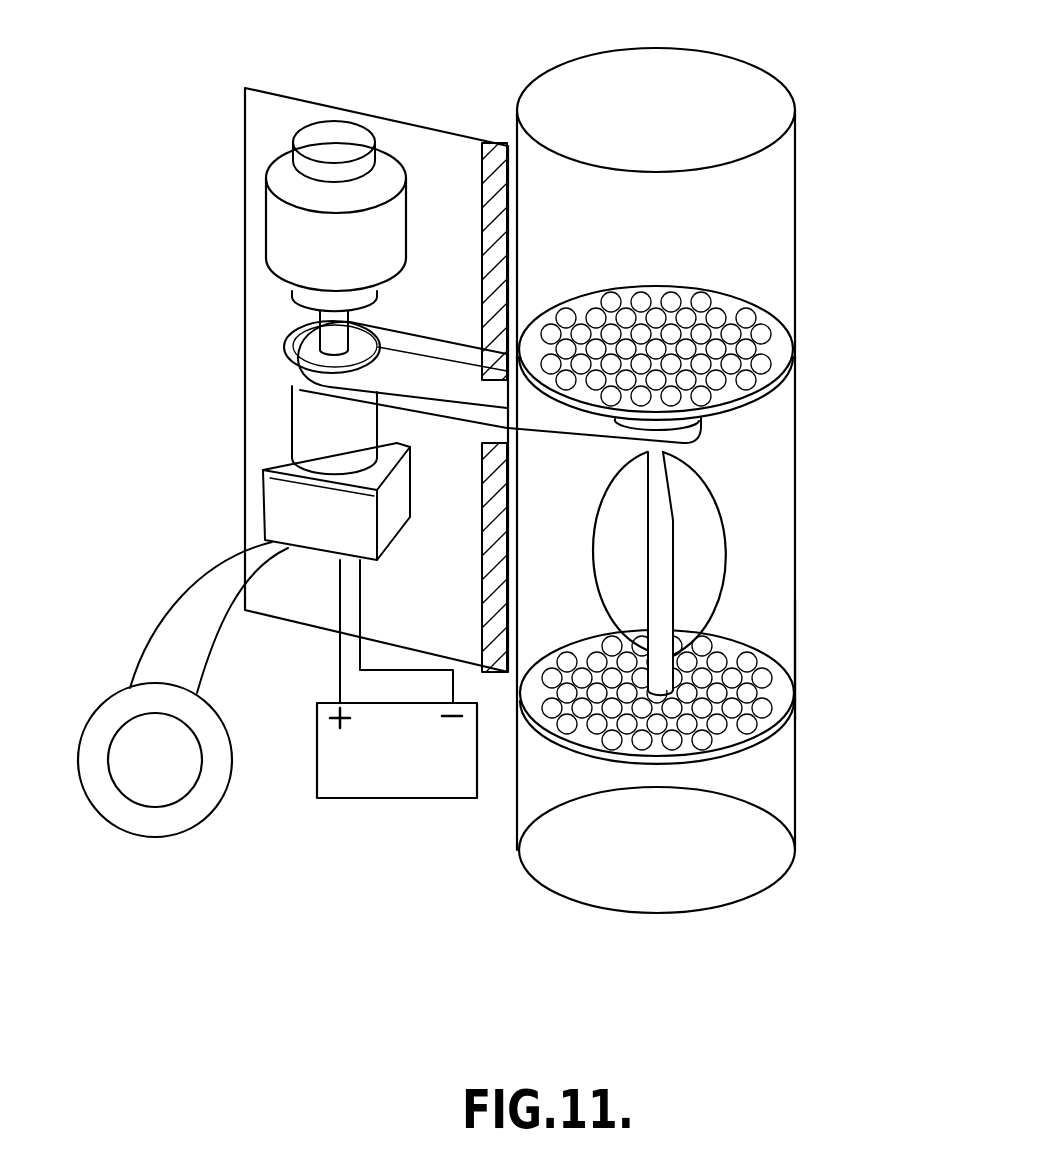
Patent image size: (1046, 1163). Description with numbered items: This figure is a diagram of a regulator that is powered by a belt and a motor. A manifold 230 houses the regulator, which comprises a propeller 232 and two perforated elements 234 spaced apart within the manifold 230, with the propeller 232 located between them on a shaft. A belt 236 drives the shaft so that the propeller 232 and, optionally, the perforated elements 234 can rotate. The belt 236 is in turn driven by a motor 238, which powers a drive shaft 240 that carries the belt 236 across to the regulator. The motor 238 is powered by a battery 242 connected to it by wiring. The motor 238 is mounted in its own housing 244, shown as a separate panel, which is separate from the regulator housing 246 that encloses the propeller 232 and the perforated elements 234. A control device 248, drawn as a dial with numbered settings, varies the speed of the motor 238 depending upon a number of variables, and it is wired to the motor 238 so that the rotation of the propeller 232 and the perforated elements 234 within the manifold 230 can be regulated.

The manifold 230 is at (733, 243).
The propeller 232 is at (703, 570).
The perforated elements 234 is at (747, 360).
The belt 236 is at (380, 393).
The motor 238 is at (313, 230).
The drive shaft 240 is at (318, 425).
The battery 242 is at (310, 513).
The motor housing 244 is at (388, 112).
The regulator housing 246 is at (797, 663).
The control device 248 is at (225, 768).